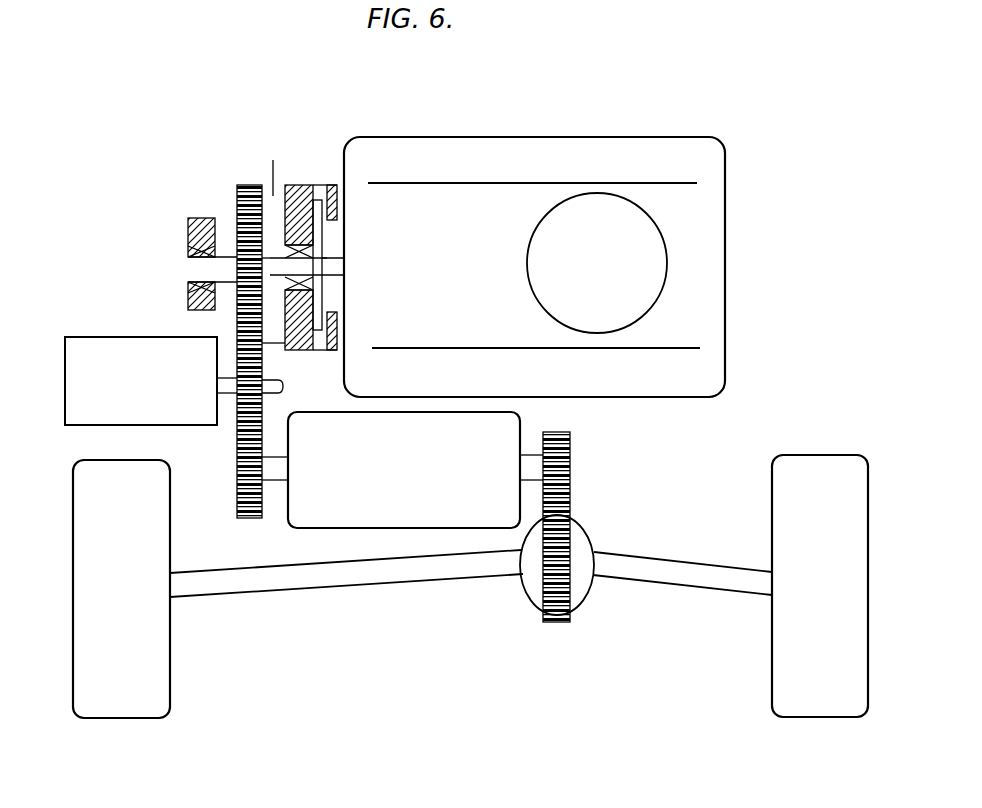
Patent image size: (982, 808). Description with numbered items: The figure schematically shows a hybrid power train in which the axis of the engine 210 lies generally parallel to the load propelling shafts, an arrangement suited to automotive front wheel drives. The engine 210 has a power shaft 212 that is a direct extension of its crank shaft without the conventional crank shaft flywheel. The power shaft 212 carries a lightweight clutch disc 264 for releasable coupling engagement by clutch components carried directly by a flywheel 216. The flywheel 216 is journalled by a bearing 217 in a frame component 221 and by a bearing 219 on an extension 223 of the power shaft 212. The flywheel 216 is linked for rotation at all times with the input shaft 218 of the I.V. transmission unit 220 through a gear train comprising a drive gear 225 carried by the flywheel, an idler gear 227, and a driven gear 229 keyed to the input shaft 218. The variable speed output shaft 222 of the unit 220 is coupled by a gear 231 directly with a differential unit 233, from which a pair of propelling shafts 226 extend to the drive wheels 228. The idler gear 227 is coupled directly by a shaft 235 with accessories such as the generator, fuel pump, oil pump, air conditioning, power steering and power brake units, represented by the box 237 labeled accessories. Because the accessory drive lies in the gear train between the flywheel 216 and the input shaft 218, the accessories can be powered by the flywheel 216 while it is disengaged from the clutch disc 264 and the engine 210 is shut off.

The engine 210 is at (493, 146).
The power shaft 212 is at (338, 270).
The flywheel 216 is at (273, 196).
The bearing 217 is at (188, 288).
The input shaft 218 is at (277, 482).
The bearing 219 is at (310, 287).
The I.V. transmission unit 220 is at (404, 470).
The frame component 221 is at (188, 235).
The variable speed output shaft 222 is at (530, 463).
The extension of the power shaft 223 is at (302, 267).
The drive gear 225 is at (238, 192).
The propelling shafts 226 is at (338, 572).
The idler gear 227 is at (268, 368).
The drive wheels 228 is at (160, 693).
The driven gear 229 is at (240, 470).
The gear 231 is at (560, 452).
The differential unit 233 is at (575, 540).
The shaft 235 is at (232, 386).
The box 237 is at (144, 348).
The clutch disc 264 is at (334, 192).